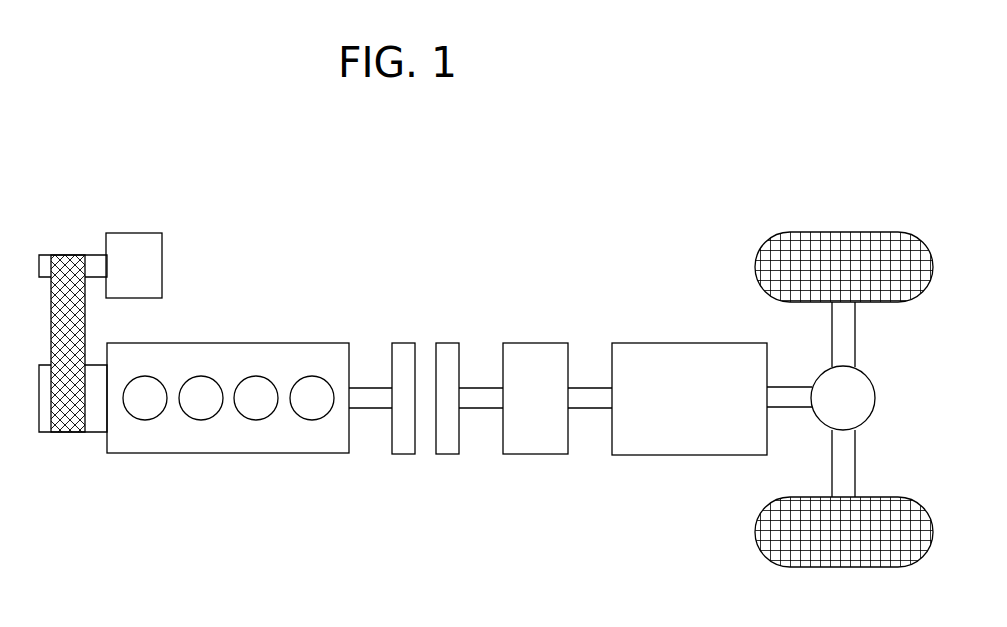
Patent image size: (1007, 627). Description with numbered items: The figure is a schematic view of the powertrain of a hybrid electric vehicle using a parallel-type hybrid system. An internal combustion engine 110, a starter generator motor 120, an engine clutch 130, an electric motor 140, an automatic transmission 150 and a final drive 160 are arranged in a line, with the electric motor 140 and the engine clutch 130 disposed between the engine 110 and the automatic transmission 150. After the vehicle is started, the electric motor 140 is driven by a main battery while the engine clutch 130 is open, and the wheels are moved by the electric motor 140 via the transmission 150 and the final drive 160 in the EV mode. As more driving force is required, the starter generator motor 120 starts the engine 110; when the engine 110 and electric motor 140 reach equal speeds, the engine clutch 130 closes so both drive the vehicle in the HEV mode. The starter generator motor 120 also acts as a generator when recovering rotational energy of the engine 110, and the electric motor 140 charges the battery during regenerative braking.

The internal combustion engine 110 is at (307, 343).
The starter generator motor 120 is at (163, 242).
The engine clutch 130 is at (457, 343).
The electric motor 140 is at (545, 343).
The automatic transmission 150 is at (718, 343).
The final drive 160 is at (872, 382).